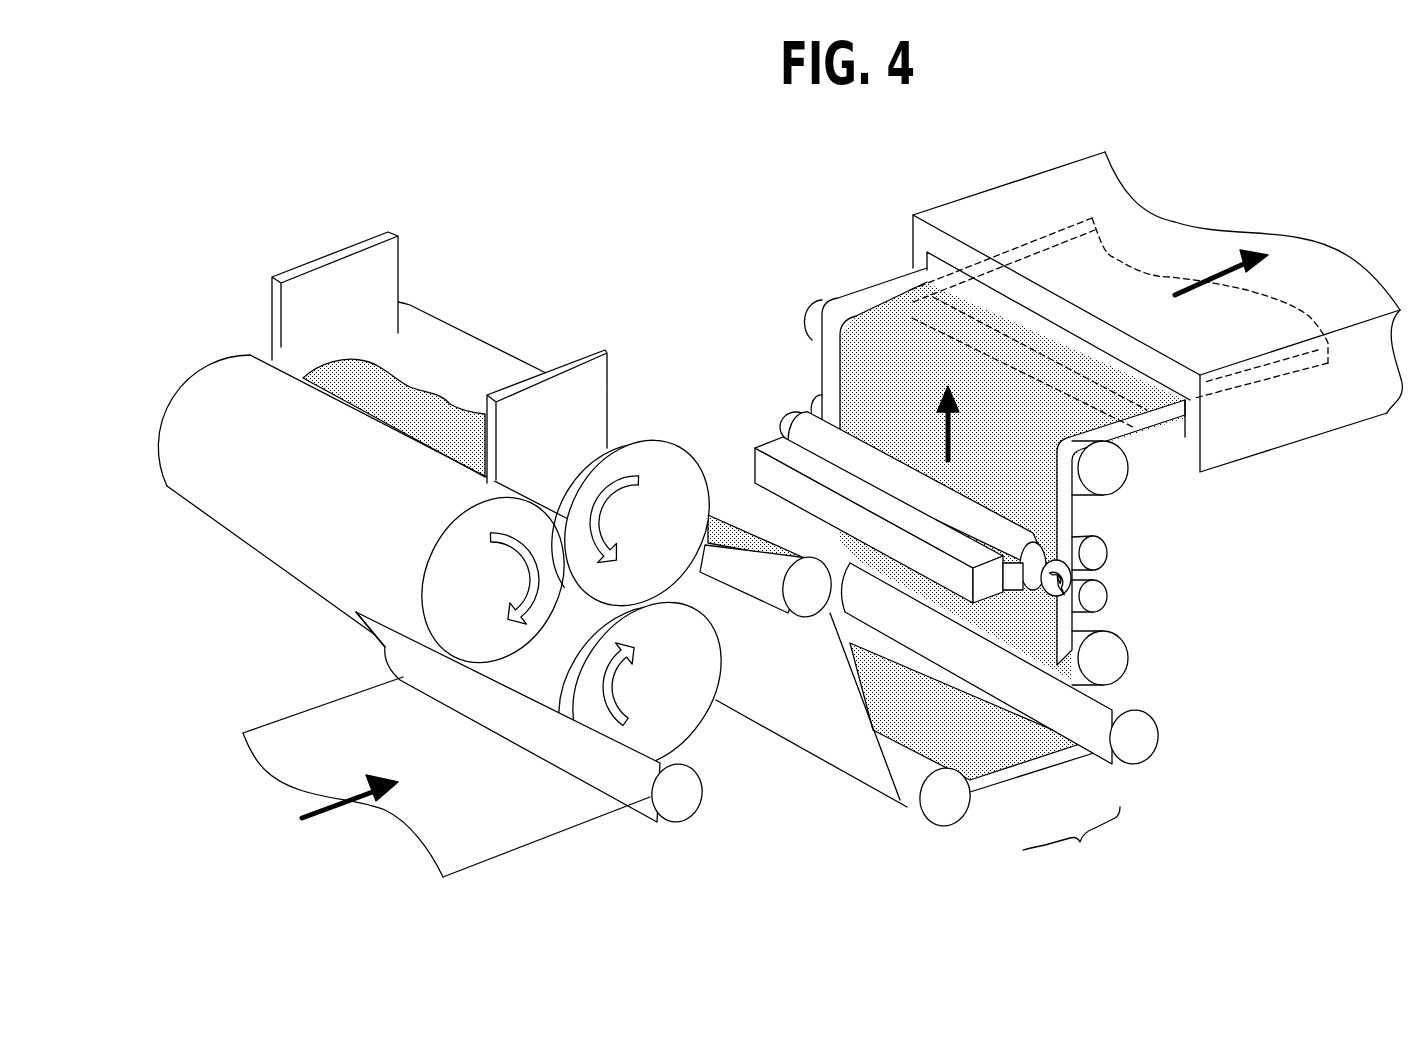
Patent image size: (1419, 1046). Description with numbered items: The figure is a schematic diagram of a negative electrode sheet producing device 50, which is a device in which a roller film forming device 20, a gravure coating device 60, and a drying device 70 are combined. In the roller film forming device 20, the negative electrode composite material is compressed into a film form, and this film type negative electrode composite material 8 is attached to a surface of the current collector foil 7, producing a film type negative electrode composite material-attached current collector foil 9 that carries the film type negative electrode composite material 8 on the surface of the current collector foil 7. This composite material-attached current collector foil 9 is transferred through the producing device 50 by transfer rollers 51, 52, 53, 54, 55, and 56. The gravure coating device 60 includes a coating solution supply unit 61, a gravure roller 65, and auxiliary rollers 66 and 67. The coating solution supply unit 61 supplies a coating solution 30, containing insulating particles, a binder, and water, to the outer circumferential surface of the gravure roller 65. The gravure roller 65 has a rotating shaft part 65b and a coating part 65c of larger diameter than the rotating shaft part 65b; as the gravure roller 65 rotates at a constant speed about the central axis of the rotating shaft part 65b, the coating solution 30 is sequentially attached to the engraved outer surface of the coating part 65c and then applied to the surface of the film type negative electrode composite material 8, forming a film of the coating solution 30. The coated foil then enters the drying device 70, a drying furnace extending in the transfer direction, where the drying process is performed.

The current collector foil 7 is at (540, 828).
The film type negative electrode composite material 8 is at (967, 750).
The film type negative electrode composite material-attached current collector foil 9 is at (1071, 842).
The roller film forming device 20 is at (238, 345).
The coating solution 30 is at (890, 318).
The negative electrode sheet producing device 50 is at (641, 239).
The transfer roller 51 is at (680, 800).
The transfer roller 52 is at (805, 605).
The transfer roller 53 is at (942, 815).
The transfer roller 54 is at (1150, 745).
The transfer roller 55 is at (1115, 660).
The transfer roller 56 is at (1115, 480).
The gravure coating device 60 is at (884, 493).
The coating solution supply unit 61 is at (775, 437).
The gravure roller 65 is at (1051, 605).
The rotating shaft part 65b is at (792, 418).
The coating part 65c is at (1050, 540).
The auxiliary roller 66 is at (1100, 597).
The auxiliary roller 67 is at (1100, 552).
The drying device 70 is at (1285, 437).